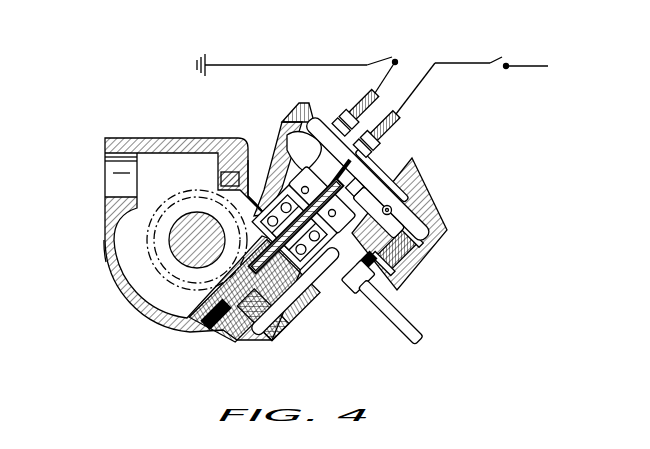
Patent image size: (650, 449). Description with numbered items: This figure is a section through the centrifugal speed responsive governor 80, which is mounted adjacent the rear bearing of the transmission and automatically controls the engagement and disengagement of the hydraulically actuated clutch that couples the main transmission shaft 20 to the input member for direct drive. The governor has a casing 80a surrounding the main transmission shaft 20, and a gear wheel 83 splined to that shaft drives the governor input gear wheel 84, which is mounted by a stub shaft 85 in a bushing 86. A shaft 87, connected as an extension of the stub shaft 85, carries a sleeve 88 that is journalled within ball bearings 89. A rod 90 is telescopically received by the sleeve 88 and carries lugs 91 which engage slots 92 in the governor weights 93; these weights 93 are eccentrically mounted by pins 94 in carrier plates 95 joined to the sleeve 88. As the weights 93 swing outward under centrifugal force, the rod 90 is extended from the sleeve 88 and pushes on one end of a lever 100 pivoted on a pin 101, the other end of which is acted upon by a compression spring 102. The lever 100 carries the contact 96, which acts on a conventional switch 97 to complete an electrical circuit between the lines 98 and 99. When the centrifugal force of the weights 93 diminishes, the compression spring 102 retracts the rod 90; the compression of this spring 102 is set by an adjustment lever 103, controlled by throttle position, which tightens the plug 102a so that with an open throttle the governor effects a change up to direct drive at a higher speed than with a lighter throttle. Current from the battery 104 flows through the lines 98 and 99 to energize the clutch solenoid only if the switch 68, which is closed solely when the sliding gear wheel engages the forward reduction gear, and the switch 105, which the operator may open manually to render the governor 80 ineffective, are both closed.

The main transmission shaft 20 is at (180, 252).
The switch 68 is at (496, 63).
The centrifugal speed responsive governor 80 is at (98, 238).
The casing 80a is at (105, 263).
The gear wheel 83 is at (191, 197).
The governor input gear wheel 84 is at (253, 342).
The stub shaft 85 is at (213, 333).
The bushing 86 is at (213, 315).
The shaft 87 is at (288, 265).
The sleeve 88 is at (285, 252).
The ball bearings 89 is at (335, 255).
The rod 90 is at (350, 190).
The lugs 91 is at (385, 182).
The slots 92 is at (388, 195).
The governor weights 93 is at (308, 158).
The pins 94 is at (287, 143).
The carrier plates 95 is at (273, 177).
The contact 96 is at (347, 163).
The switch 97 is at (328, 135).
The line 98 is at (265, 64).
The line 99 is at (443, 63).
The lever 100 is at (413, 232).
The pin 101 is at (392, 210).
The compression spring 102 is at (405, 245).
The plug 102a is at (397, 273).
The adjustment lever 103 is at (407, 322).
The battery 104 is at (205, 58).
The switch 105 is at (384, 60).